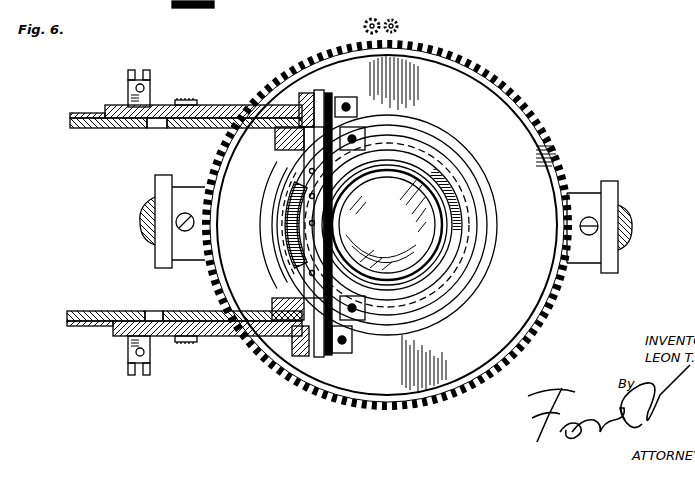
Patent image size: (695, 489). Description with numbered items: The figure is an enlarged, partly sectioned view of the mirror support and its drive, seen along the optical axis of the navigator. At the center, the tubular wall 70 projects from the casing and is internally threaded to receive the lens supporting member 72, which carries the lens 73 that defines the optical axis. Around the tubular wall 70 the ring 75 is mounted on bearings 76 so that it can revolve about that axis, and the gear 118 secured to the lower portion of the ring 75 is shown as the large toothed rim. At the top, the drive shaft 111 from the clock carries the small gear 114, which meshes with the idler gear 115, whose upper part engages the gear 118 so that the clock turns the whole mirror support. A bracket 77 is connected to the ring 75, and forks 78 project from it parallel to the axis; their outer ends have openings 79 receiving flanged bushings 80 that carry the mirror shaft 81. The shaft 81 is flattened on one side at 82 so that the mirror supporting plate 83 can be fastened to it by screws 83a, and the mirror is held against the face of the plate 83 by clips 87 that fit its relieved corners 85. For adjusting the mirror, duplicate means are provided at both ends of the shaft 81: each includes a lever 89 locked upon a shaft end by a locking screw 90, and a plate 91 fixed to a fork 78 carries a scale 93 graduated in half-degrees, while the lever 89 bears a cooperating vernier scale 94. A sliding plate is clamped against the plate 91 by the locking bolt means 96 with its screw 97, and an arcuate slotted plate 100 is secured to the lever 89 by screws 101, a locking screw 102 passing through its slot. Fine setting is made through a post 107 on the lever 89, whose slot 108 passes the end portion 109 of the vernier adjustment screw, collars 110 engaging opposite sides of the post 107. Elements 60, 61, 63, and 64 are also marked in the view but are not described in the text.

The knob 60 is at (147, 213).
The knob 61 is at (634, 235).
The bracket block 63 is at (181, 188).
The screw 64 is at (186, 233).
The tubular wall 70 is at (468, 168).
The lens supporting member 72 is at (445, 137).
The lens 73 is at (488, 243).
The ring 75 is at (492, 220).
The bearings 76 is at (478, 190).
The bracket 77 is at (276, 164).
The forks 78 is at (282, 140).
The openings 79 is at (280, 298).
The flanged bushings 80 is at (310, 93).
The mirror shaft 81 is at (325, 100).
The flattened side 82 is at (330, 205).
The screws 83a is at (312, 222).
The mirror supporting plate 83 is at (640, 4).
The relieved corners 85 is at (590, 4).
The clips 87 is at (553, 4).
The lever 89 is at (268, 104).
The locking screw 90 is at (352, 112).
The plate 91 is at (186, 128).
The scale 93 is at (80, 116).
The vernier scale 94 is at (107, 112).
The locking bolt means 96 is at (168, 0).
The screw 97 is at (139, 4).
The slotted plate 100 is at (195, 106).
The screws 101 is at (187, 100).
The locking screw 102 is at (205, 6).
The post 107 is at (137, 97).
The slot 108 is at (139, 70).
The end portion 109 is at (150, 84).
The collars 110 is at (146, 88).
The drive shaft 111 is at (400, 28).
The small gear 114 is at (395, 20).
The idler gear 115 is at (371, 19).
The gear 118 is at (540, 122).